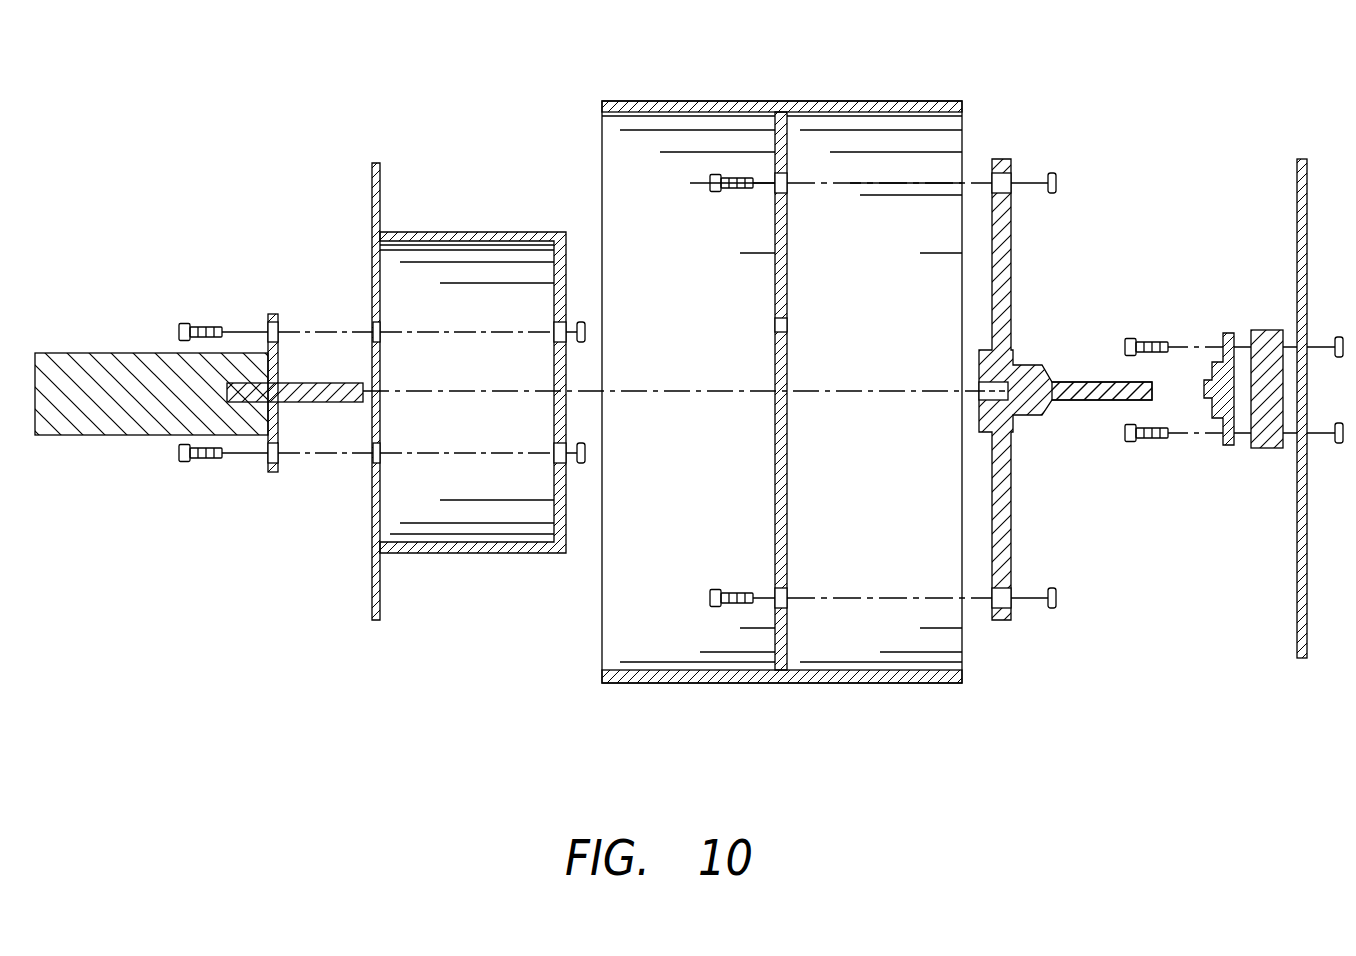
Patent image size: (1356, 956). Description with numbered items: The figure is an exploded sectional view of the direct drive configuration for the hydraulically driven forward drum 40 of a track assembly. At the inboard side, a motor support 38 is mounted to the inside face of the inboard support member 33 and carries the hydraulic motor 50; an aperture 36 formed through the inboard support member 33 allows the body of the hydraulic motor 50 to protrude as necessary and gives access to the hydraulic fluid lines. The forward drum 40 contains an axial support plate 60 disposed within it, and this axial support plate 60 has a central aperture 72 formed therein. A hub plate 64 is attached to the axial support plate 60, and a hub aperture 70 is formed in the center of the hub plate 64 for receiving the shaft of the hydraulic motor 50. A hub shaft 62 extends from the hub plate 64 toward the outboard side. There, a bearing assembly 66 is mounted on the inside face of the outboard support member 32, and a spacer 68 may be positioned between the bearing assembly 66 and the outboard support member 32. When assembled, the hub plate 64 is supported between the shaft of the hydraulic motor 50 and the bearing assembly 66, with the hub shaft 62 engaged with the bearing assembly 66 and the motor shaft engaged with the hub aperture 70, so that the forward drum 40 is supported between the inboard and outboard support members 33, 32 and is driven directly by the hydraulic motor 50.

The outboard support member 32 is at (1297, 232).
The inboard support member 33 is at (372, 193).
The aperture 36 is at (372, 320).
The motor support 38 is at (486, 230).
The forward drum 40 is at (782, 348).
The hydraulic motor 50 is at (108, 352).
The axial support plate 60 is at (787, 170).
The hub shaft 62 is at (1088, 380).
The hub plate 64 is at (1019, 389).
The bearing assembly 66 is at (1215, 420).
The spacer 68 is at (1262, 450).
The hub aperture 70 is at (979, 393).
The central aperture 72 is at (775, 325).